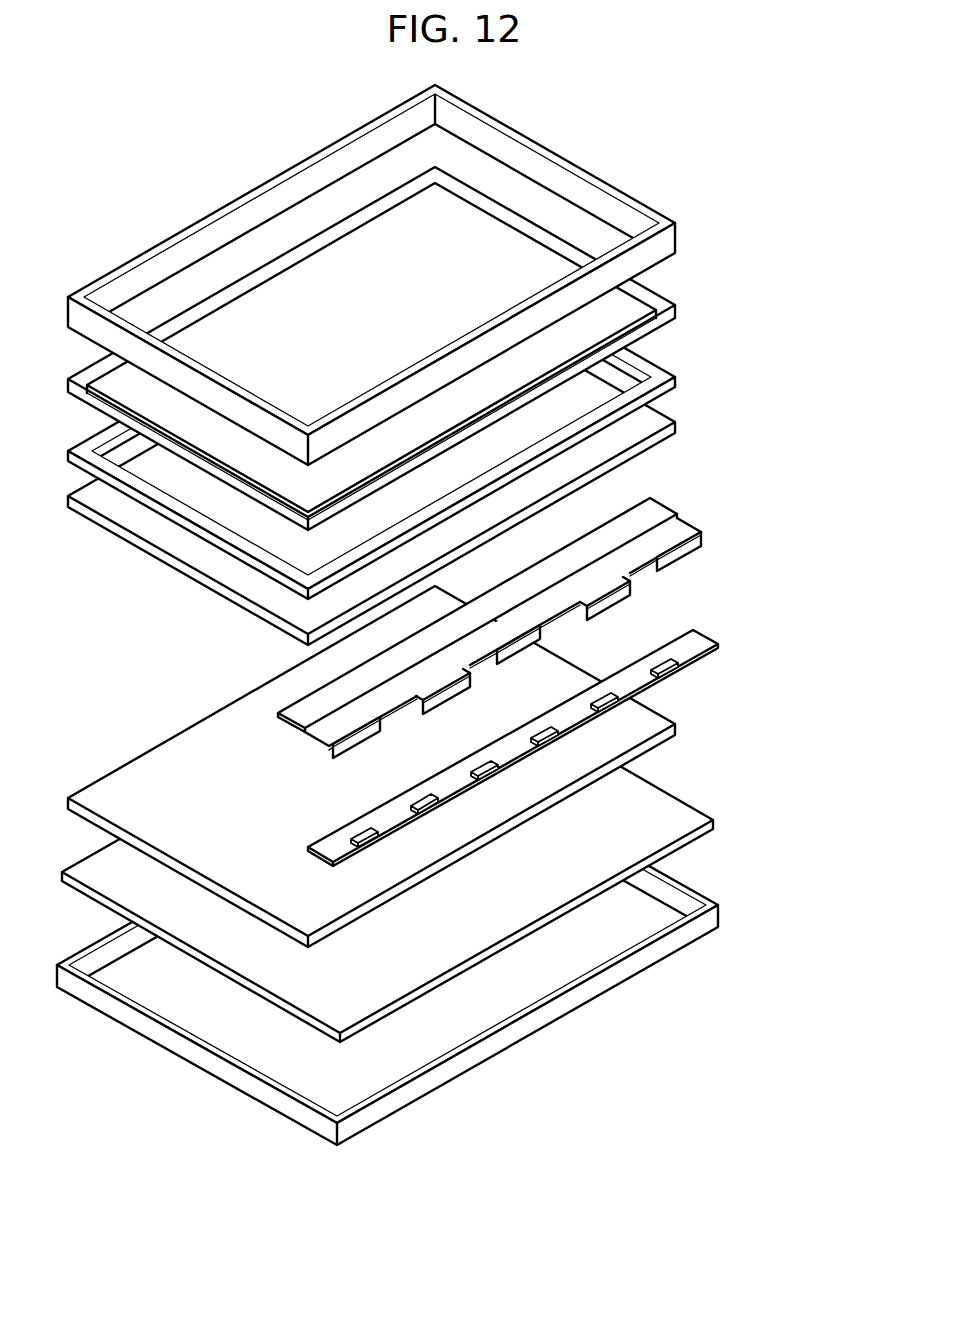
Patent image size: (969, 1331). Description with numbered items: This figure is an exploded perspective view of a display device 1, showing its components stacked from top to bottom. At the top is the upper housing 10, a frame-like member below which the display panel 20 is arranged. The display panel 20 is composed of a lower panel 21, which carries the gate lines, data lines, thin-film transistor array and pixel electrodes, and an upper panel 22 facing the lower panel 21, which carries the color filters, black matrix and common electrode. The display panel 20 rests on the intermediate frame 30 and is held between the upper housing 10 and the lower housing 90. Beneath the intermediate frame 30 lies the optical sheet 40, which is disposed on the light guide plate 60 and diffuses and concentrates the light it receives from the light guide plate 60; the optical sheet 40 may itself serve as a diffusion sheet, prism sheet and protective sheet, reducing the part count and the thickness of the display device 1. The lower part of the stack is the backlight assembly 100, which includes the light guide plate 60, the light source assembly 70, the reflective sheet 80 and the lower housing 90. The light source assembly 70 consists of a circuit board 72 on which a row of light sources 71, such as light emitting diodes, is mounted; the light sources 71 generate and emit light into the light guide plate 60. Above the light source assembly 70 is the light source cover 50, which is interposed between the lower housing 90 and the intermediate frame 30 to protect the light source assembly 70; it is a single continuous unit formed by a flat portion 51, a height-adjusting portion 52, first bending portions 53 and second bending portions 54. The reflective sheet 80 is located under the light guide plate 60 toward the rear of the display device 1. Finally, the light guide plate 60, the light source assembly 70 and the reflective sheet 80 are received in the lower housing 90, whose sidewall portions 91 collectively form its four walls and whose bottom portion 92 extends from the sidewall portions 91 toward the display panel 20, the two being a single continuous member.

The display device 1 is at (456, 627).
The upper housing 10 is at (658, 248).
The display panel 20 is at (431, 348).
The lower panel 21 is at (657, 297).
The upper panel 22 is at (618, 305).
The intermediate frame 30 is at (668, 366).
The optical sheet 40 is at (657, 420).
The light source cover 50 is at (541, 614).
The flat portion 51 is at (650, 512).
The height-adjusting portion 52 is at (675, 527).
The first bending portion 53 is at (697, 537).
The second bending portion 54 is at (613, 598).
The light guide plate 60 is at (652, 724).
The light source assembly 70 is at (557, 743).
The light source 71 is at (684, 664).
The circuit board 72 is at (693, 642).
The reflective sheet 80 is at (690, 818).
The lower housing 90 is at (431, 946).
The sidewall portion 91 is at (712, 917).
The bottom portion 92 is at (701, 901).
The backlight assembly 100 is at (456, 808).